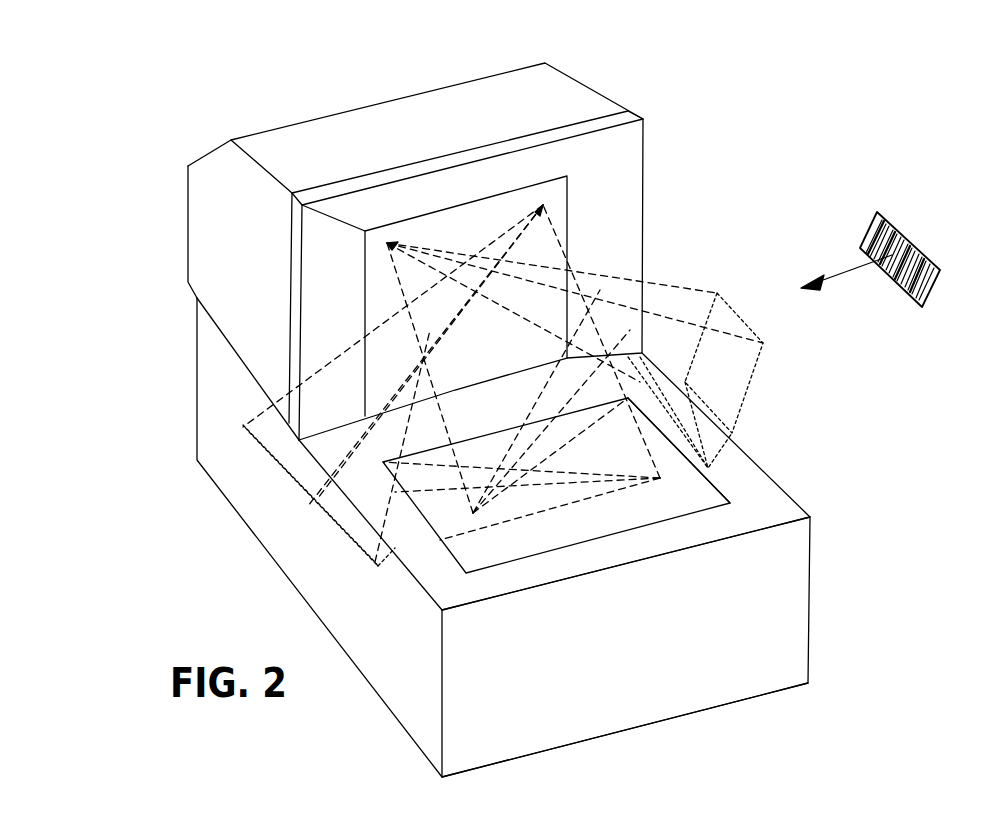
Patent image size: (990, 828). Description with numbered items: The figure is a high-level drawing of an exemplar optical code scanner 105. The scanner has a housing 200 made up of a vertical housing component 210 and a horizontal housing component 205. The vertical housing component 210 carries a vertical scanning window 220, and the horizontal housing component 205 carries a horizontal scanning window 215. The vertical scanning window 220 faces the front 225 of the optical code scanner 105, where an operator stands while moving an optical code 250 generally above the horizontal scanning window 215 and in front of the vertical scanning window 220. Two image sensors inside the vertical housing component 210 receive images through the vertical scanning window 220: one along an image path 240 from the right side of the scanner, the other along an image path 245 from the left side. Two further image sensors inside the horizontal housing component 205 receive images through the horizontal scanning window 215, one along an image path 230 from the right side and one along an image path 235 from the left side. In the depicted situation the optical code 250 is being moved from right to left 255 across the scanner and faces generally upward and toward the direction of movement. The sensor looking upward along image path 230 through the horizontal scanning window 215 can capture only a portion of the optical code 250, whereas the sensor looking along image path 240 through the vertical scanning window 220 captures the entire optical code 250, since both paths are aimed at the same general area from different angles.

The optical code scanner 105 is at (148, 74).
The housing 200 is at (215, 373).
The horizontal housing component 205 is at (742, 475).
The vertical housing component 210 is at (565, 97).
The horizontal scanning window 215 is at (720, 497).
The vertical scanning window 220 is at (452, 222).
The front 225 is at (638, 675).
The image path 230 is at (570, 400).
The image path 235 is at (647, 485).
The image path 240 is at (668, 288).
The image path 245 is at (272, 467).
The optical code 250 is at (897, 223).
The direction of movement (right to left) 255 is at (857, 267).